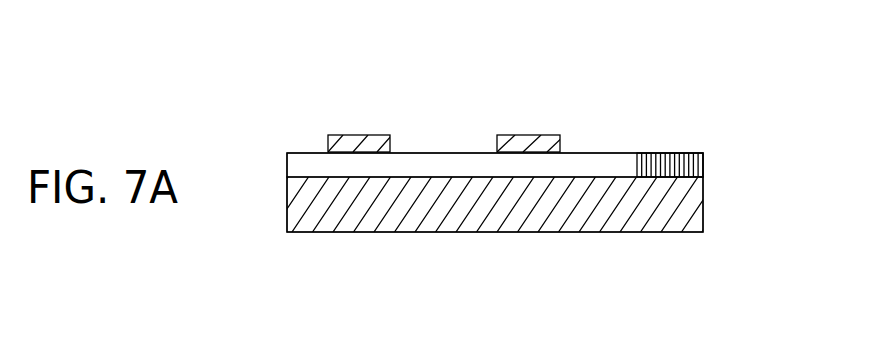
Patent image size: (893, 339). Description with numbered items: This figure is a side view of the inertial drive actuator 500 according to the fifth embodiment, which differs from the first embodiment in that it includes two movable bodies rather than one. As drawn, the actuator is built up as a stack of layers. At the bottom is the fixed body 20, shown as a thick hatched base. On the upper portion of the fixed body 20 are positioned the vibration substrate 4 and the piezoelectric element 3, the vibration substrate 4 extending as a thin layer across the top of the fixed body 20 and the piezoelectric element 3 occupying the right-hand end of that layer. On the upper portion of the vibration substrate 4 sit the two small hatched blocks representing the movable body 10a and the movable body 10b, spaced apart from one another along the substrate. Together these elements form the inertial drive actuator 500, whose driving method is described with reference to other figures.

The inertial drive actuator 500 is at (702, 72).
The fixed body 20 is at (570, 232).
The vibration substrate 4 is at (613, 153).
The piezoelectric element 3 is at (678, 153).
The movable body 10a is at (375, 135).
The movable body 10b is at (528, 135).